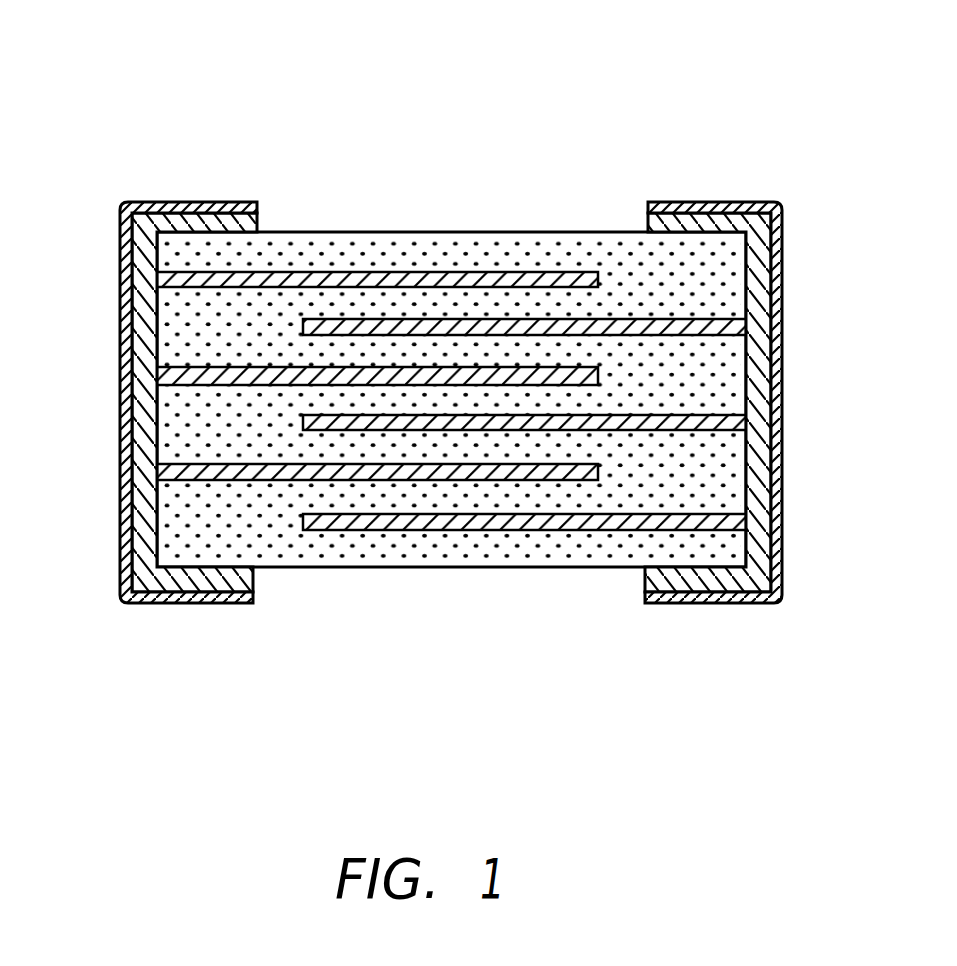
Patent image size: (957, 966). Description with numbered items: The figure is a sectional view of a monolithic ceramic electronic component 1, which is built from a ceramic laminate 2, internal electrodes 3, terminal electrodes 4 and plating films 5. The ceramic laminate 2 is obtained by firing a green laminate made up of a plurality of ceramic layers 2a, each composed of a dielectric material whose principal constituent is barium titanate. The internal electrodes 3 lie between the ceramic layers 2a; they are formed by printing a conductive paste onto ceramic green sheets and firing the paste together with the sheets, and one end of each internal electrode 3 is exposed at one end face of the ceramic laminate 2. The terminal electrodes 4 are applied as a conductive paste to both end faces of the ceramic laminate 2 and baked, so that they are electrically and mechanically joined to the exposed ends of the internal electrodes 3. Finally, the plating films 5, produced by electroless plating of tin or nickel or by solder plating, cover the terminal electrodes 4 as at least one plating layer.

The ceramic electronic component 1 is at (452, 317).
The ceramic laminate 2 is at (451, 353).
The ceramic layers 2a is at (465, 307).
The internal electrodes 3 is at (322, 318).
The terminal electrodes 4 is at (134, 226).
The plating films 5 is at (120, 395).